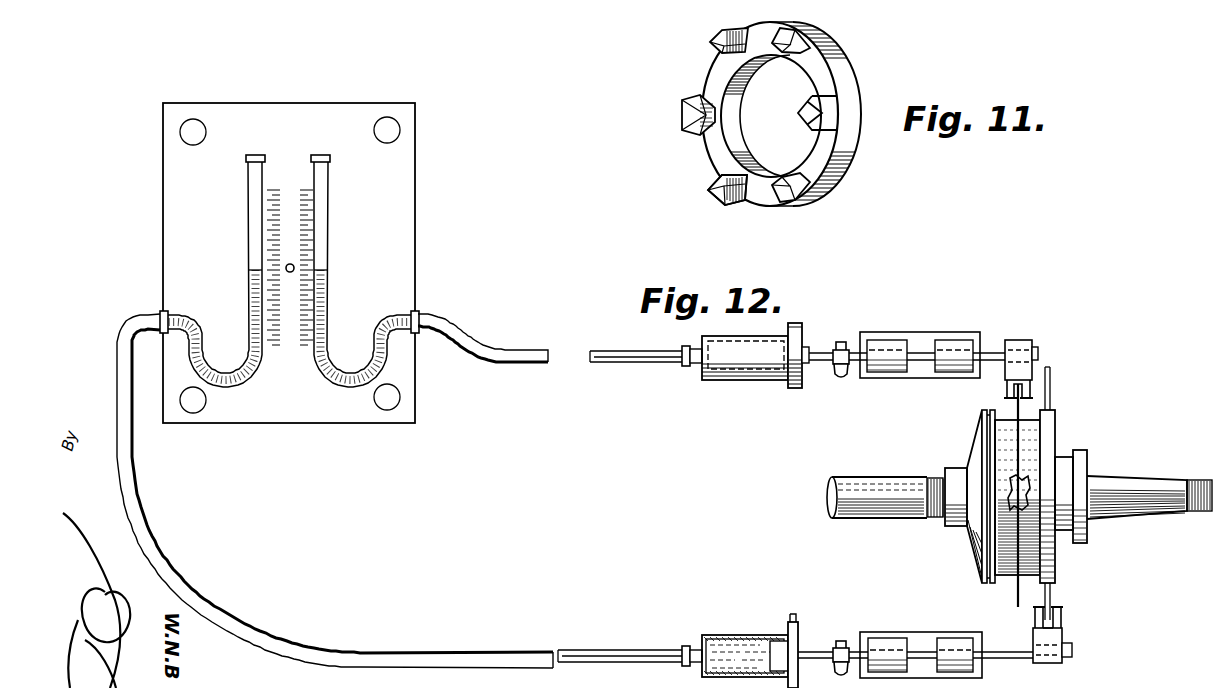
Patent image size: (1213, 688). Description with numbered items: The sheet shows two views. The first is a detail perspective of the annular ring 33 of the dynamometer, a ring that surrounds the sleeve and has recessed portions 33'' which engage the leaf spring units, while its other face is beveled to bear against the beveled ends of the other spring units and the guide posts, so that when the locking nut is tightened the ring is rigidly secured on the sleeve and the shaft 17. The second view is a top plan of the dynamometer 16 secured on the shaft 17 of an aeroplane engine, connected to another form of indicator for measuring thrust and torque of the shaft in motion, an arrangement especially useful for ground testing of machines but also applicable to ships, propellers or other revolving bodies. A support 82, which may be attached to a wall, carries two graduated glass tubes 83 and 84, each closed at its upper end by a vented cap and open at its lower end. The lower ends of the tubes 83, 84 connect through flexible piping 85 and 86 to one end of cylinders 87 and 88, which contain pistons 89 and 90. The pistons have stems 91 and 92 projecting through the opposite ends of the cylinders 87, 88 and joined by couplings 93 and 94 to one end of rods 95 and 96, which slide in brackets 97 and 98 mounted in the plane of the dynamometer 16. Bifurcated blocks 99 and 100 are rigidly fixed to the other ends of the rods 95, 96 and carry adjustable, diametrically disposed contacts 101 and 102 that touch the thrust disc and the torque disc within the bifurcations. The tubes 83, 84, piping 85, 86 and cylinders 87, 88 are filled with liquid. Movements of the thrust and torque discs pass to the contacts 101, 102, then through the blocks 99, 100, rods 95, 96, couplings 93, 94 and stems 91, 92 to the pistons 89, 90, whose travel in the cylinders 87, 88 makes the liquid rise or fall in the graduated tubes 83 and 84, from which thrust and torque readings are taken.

In FIG. 11, the annular ring 33 is at (785, 114).
In FIG. 11, the recessed portions 33'' is at (707, 178).
In FIG. 12, the dynamometer 16 is at (973, 551).
In FIG. 12, the shaft 17 is at (887, 480).
In FIG. 12, the support 82 is at (289, 263).
In FIG. 12, the graduated glass tube 83 is at (249, 207).
In FIG. 12, the graduated glass tube 84 is at (332, 257).
In FIG. 12, the flexible piping 85 is at (460, 660).
In FIG. 12, the flexible piping 86 is at (547, 353).
In FIG. 12, the cylinder 87 is at (722, 633).
In FIG. 12, the cylinder 88 is at (723, 381).
In FIG. 12, the piston 89 is at (778, 625).
In FIG. 12, the piston 90 is at (770, 380).
In FIG. 12, the stem 91 is at (817, 653).
In FIG. 12, the stem 92 is at (817, 351).
In FIG. 12, the coupling 93 is at (838, 678).
In FIG. 12, the coupling 94 is at (838, 379).
In FIG. 12, the rod 95 is at (913, 652).
In FIG. 12, the rod 96 is at (923, 348).
In FIG. 12, the bracket 97 is at (922, 668).
In FIG. 12, the bracket 98 is at (918, 370).
In FIG. 12, the bifurcated block 99 is at (1052, 665).
In FIG. 12, the bifurcated block 100 is at (1018, 342).
In FIG. 12, the contact 101 is at (1062, 615).
In FIG. 12, the contact 102 is at (1000, 389).